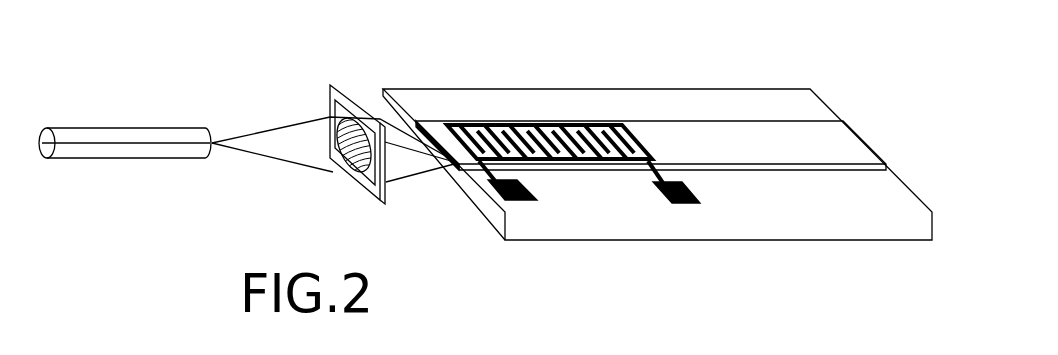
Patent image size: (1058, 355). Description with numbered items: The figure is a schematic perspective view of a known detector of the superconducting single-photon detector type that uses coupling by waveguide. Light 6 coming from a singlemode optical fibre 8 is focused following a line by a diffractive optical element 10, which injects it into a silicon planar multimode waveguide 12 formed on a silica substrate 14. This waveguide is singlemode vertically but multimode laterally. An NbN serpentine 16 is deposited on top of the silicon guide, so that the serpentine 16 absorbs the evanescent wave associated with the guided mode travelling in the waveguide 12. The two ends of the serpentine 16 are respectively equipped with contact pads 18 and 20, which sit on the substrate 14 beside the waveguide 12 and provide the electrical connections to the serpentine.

The light 6 is at (278, 128).
The singlemode optical fibre 8 is at (125, 137).
The diffractive optical element 10 is at (342, 83).
The silicon planar multimode waveguide 12 is at (727, 138).
The silica substrate 14 is at (792, 232).
The NbN serpentine 16 is at (626, 137).
The contact pad 18 is at (517, 194).
The contact pad 20 is at (682, 195).